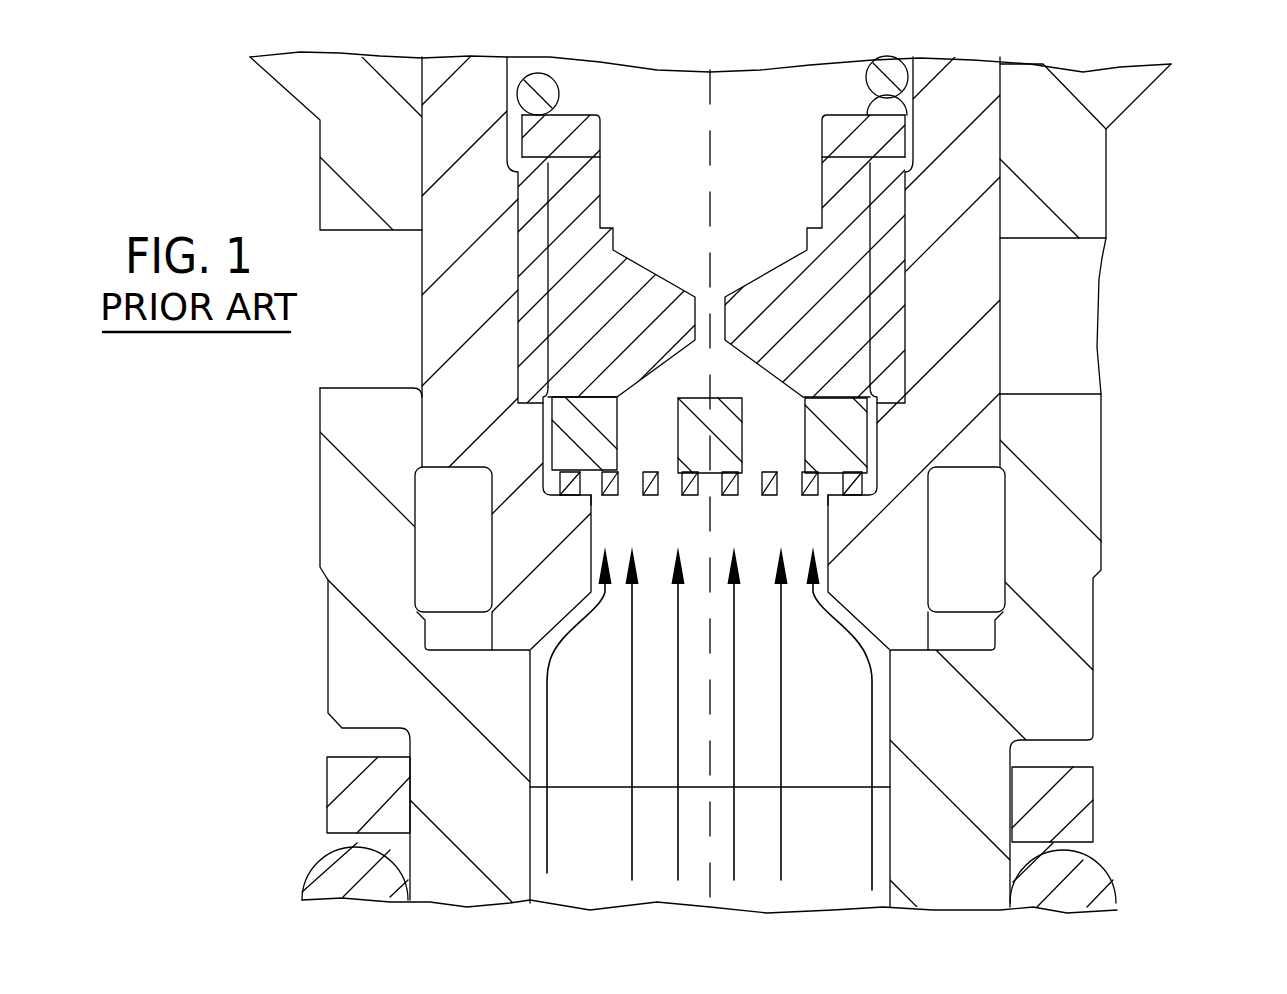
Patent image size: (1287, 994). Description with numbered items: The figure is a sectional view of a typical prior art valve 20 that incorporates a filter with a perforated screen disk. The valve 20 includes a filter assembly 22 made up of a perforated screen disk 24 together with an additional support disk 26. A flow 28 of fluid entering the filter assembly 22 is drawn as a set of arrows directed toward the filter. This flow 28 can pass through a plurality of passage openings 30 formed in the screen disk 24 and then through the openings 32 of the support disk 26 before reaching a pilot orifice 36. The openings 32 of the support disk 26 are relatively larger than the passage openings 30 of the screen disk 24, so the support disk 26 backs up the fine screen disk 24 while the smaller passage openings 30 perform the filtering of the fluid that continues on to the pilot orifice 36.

The valve 20 is at (262, 158).
The filter assembly 22 is at (616, 518).
The perforated screen disk 24 is at (828, 498).
The support disk 26 is at (840, 453).
The flow 28 is at (735, 620).
The passage openings 30 is at (914, 595).
The openings 32 is at (615, 420).
The pilot orifice 36 is at (722, 322).